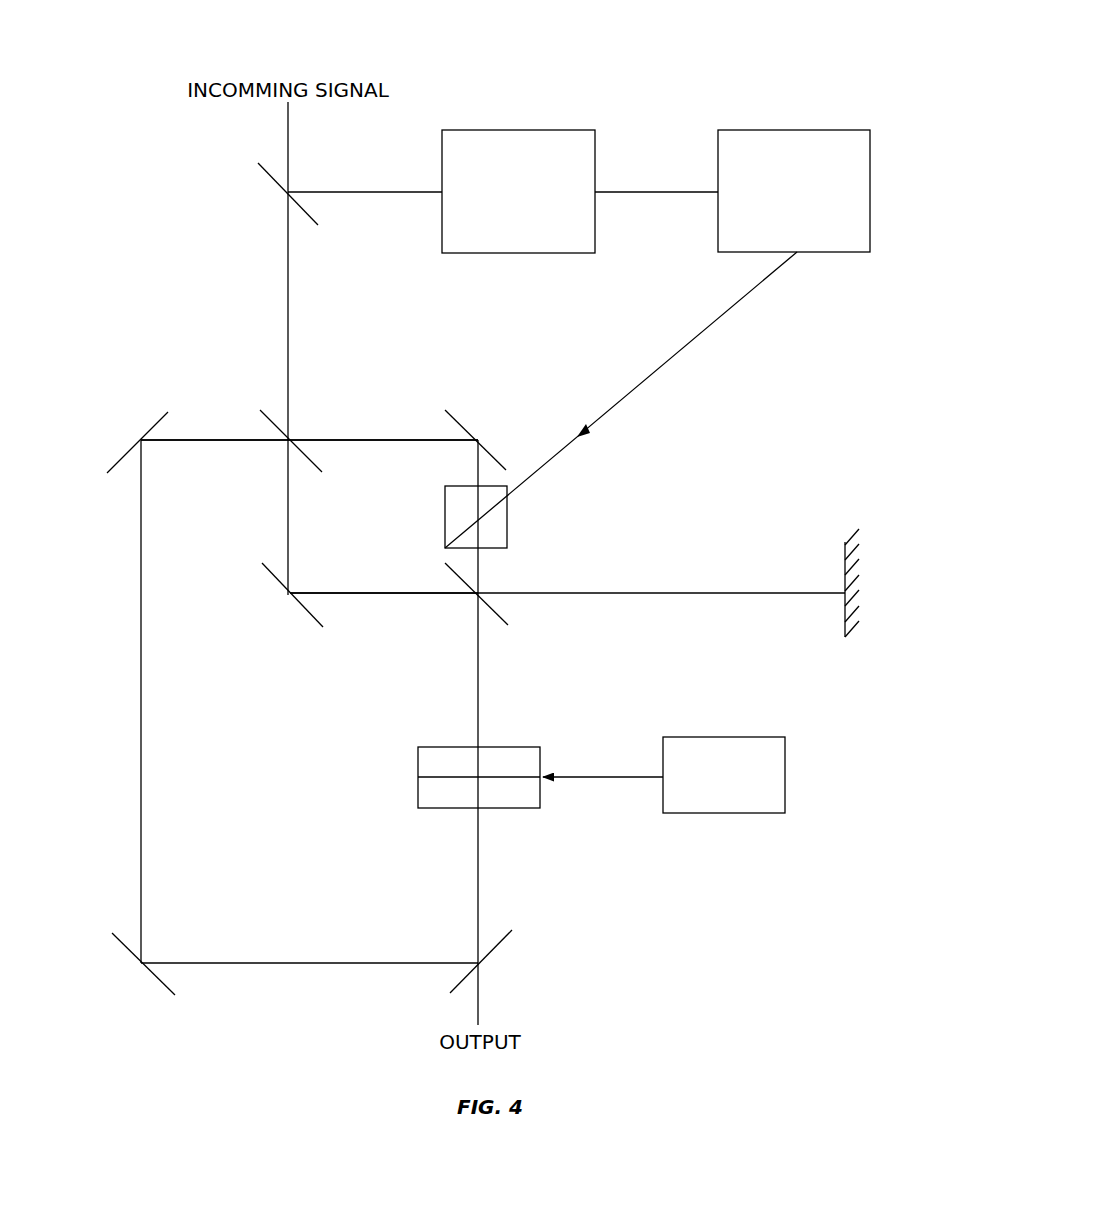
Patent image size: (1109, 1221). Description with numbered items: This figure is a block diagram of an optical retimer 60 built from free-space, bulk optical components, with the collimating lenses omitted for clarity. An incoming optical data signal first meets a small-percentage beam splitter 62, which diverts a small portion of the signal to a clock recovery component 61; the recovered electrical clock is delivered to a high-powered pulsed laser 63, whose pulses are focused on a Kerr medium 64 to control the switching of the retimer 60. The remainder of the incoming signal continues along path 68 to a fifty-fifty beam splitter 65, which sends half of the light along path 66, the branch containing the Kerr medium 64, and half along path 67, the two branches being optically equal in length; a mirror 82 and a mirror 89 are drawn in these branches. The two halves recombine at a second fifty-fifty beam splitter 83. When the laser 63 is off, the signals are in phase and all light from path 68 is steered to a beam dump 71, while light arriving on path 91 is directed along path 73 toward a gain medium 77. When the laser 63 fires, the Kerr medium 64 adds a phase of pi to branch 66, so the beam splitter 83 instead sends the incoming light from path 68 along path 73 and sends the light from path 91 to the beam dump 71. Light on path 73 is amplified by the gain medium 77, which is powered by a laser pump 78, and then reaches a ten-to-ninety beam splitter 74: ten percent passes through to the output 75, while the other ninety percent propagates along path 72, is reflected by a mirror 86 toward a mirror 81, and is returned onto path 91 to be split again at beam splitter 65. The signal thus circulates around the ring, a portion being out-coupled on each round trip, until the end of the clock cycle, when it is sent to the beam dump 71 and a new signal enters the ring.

The optical retimer 60 is at (845, 30).
The clock recovery component 61 is at (563, 130).
The small-percentage beam splitter 62 is at (280, 202).
The high-powered pulsed laser 63 is at (838, 130).
The Kerr medium 64 is at (440, 515).
The 50/50 beam splitter 65 is at (300, 432).
The path 66 is at (383, 445).
The path 67 is at (285, 519).
The path 68 is at (282, 318).
The beam dump 71 is at (887, 583).
The path 72 is at (132, 658).
The path 73 is at (495, 668).
The beam splitter 74 is at (490, 966).
The output 75 is at (479, 1021).
The gain medium 77 is at (410, 810).
The laser pump 78 is at (755, 737).
The mirror 81 is at (133, 430).
The mirror 82 is at (484, 432).
The 50/50 beam splitter 83 is at (468, 602).
The mirror 86 is at (135, 975).
The mirror 89 is at (287, 605).
The path 91 is at (210, 445).